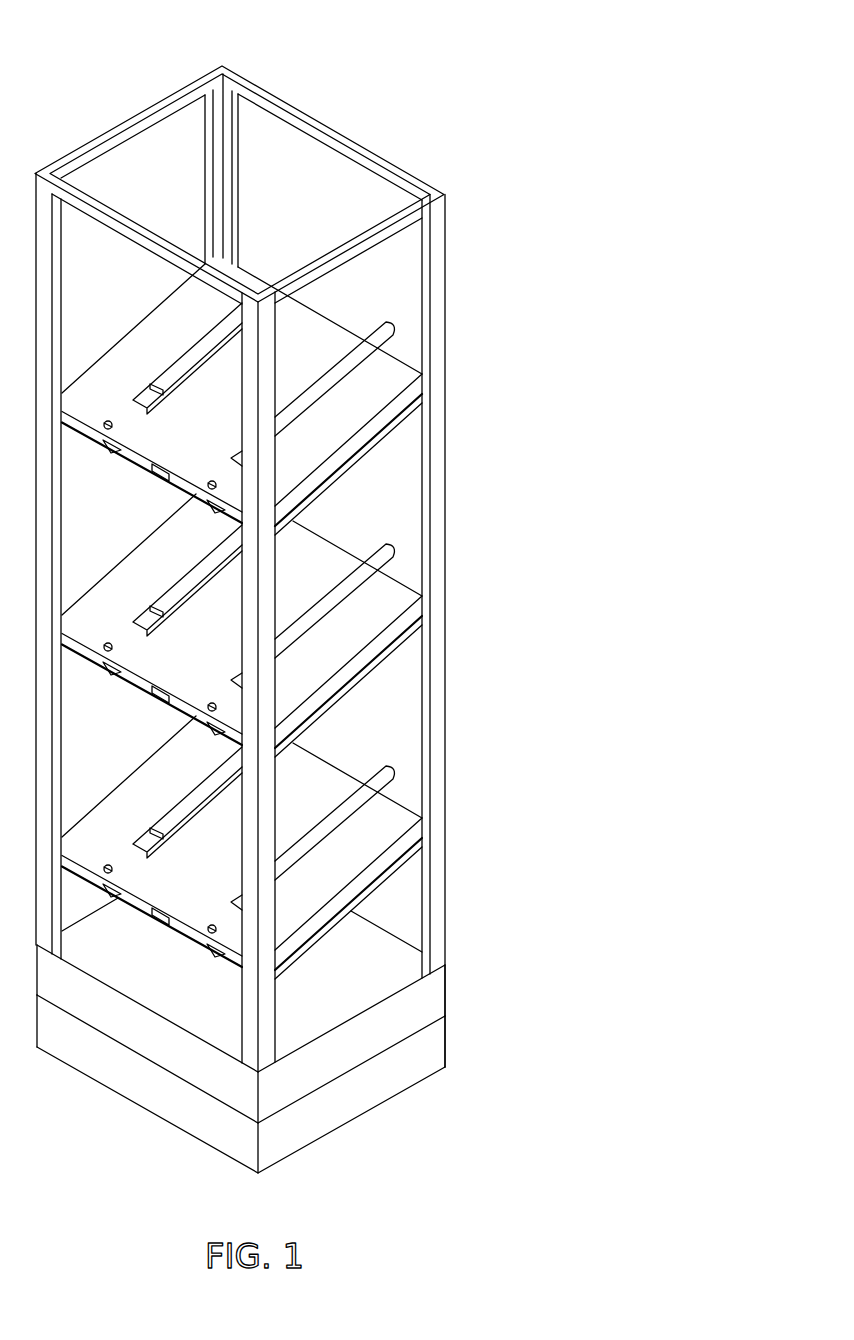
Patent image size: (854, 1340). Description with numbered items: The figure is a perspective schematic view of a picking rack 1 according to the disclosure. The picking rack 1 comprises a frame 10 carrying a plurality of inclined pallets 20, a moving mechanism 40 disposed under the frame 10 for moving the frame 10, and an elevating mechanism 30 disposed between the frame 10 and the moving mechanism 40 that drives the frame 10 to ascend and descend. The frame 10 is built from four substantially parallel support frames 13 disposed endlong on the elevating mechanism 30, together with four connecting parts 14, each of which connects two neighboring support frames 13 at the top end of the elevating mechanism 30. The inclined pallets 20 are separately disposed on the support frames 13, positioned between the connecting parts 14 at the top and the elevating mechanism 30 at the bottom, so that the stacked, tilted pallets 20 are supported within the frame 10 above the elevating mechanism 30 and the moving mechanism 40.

The picking rack 1 is at (62, 35).
The frame 10 is at (345, 119).
The support frame 13 is at (440, 283).
The connecting part 14 is at (410, 170).
The inclined pallet 20 is at (402, 364).
The elevating mechanism 30 is at (420, 1002).
The moving mechanism 40 is at (393, 1075).